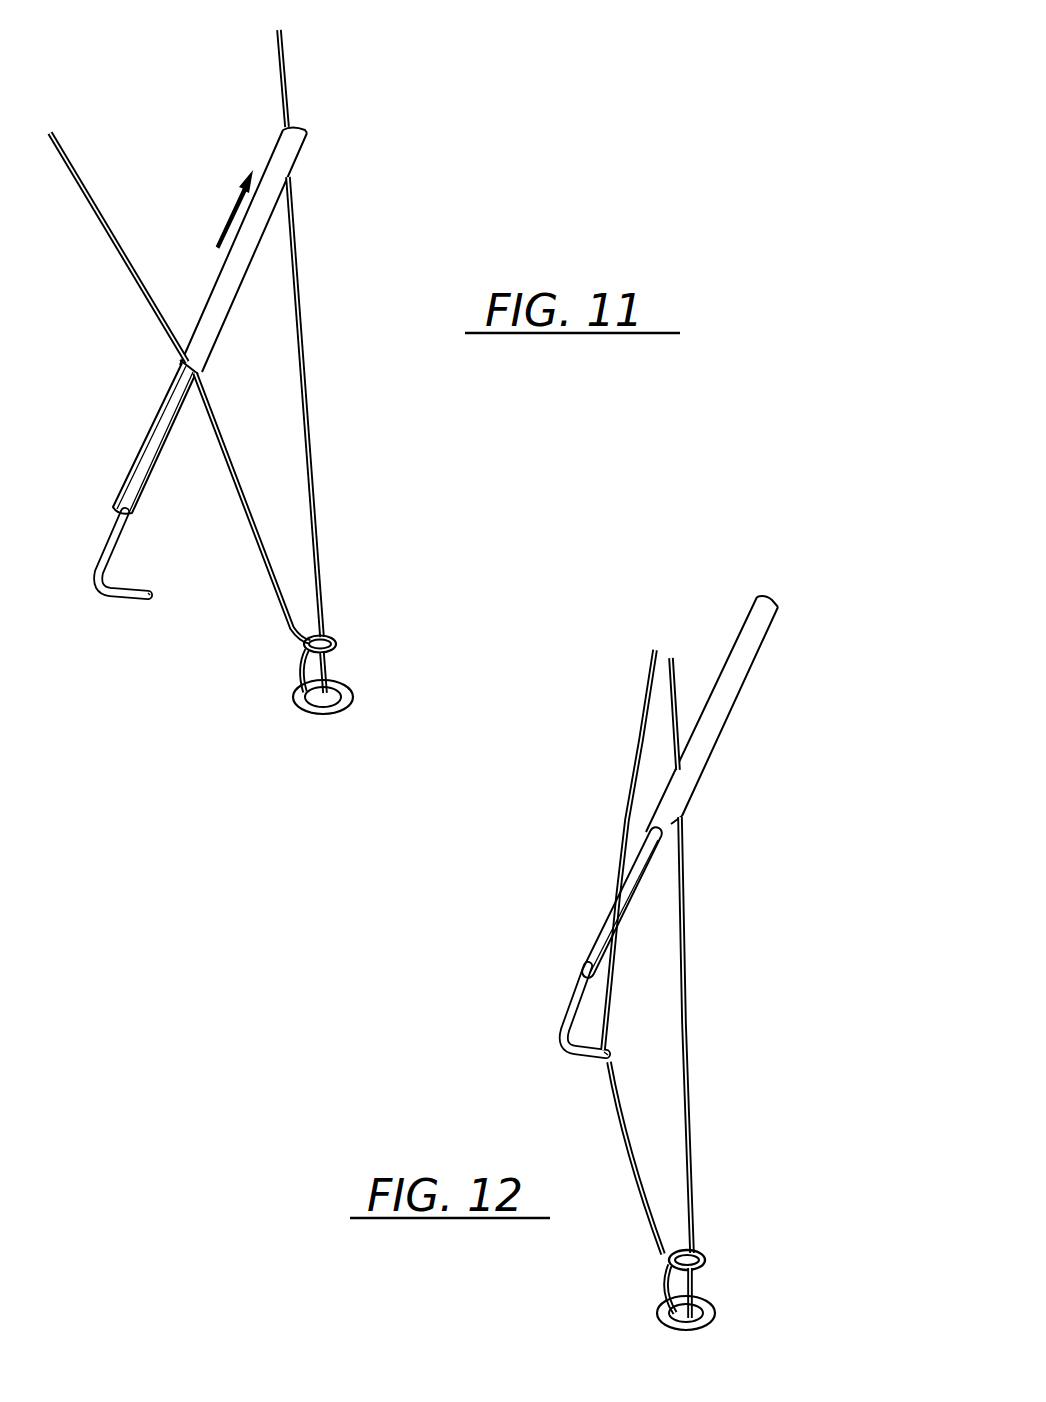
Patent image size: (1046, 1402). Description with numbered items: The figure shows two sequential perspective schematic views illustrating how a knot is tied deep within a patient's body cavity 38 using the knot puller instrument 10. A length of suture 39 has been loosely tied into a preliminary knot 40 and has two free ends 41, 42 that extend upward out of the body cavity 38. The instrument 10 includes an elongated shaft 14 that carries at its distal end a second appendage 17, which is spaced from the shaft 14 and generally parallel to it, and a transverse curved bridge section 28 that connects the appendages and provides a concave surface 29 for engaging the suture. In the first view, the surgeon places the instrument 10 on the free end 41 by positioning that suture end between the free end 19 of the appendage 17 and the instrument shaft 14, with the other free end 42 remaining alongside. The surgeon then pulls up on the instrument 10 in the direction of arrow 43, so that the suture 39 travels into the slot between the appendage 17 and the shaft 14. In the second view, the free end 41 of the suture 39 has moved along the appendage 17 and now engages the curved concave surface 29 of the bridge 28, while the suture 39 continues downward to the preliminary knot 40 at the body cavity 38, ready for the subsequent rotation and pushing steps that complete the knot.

In FIG. 11, the knot puller instrument 10 is at (192, 100).
In FIG. 12, the knot puller instrument 10 is at (760, 555).
In FIG. 11, the shaft 14 is at (215, 308).
In FIG. 12, the shaft 14 is at (671, 825).
In FIG. 11, the second appendage 17 is at (163, 428).
In FIG. 12, the second appendage 17 is at (623, 897).
In FIG. 11, the free end 19 is at (183, 365).
In FIG. 11, the bridge section 28 is at (156, 601).
In FIG. 12, the bridge section 28 is at (618, 1045).
In FIG. 12, the concave surface 29 is at (613, 1075).
In FIG. 11, the body cavity 38 is at (347, 688).
In FIG. 12, the body cavity 38 is at (707, 1300).
In FIG. 11, the suture 39 is at (310, 423).
In FIG. 12, the suture 39 is at (690, 1093).
In FIG. 11, the preliminary knot 40 is at (337, 641).
In FIG. 12, the preliminary knot 40 is at (706, 1262).
In FIG. 11, the free end 41 is at (140, 285).
In FIG. 12, the free end 41 is at (640, 741).
In FIG. 11, the free end 42 is at (288, 46).
In FIG. 12, the free end 42 is at (684, 857).
In FIG. 11, the arrow 43 is at (223, 232).